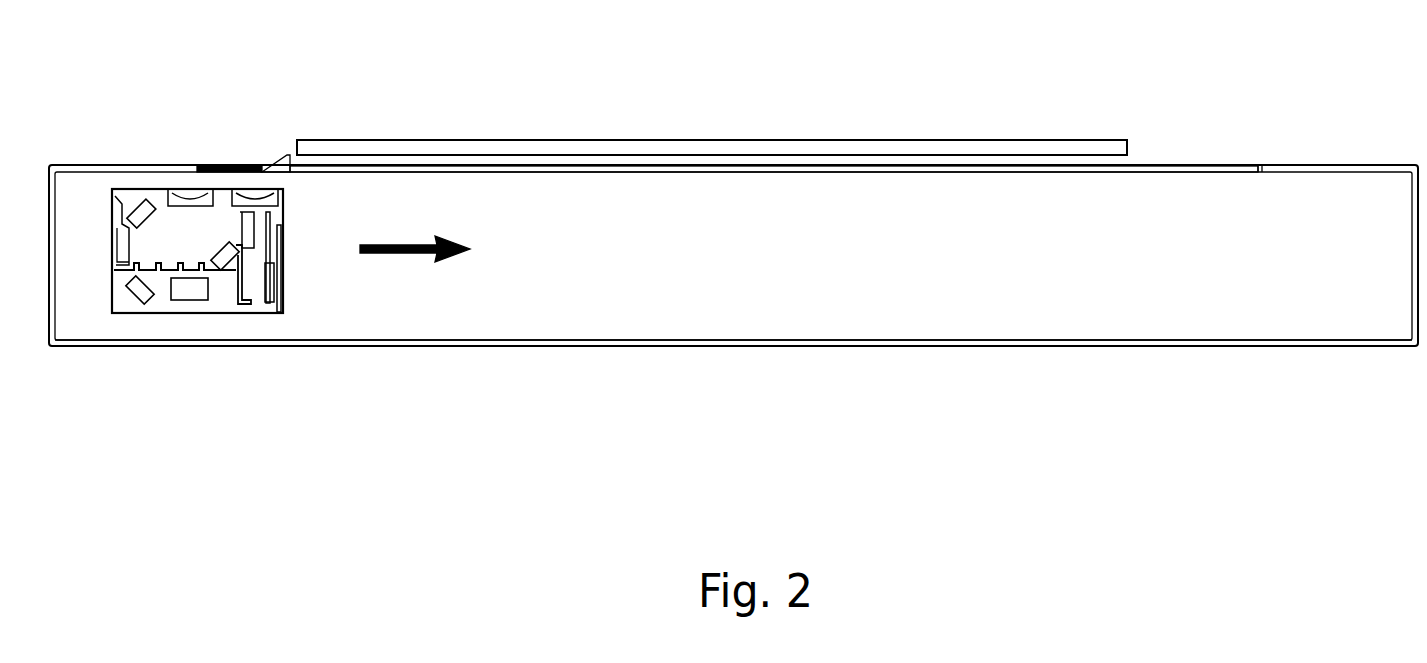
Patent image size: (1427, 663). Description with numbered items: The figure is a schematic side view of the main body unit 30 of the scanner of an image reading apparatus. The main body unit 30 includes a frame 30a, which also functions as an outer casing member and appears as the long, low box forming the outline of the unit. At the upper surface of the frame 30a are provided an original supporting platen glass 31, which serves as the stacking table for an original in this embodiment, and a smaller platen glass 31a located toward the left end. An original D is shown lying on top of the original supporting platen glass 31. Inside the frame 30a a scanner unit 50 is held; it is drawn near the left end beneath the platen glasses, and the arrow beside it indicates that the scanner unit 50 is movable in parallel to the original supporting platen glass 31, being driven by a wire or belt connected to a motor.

The main body unit 30 is at (1186, 138).
The frame 30a is at (880, 347).
The original supporting platen glass 31 is at (1063, 173).
The platen glass 31a is at (224, 165).
The document D is at (428, 140).
The scanner unit 50 is at (304, 259).